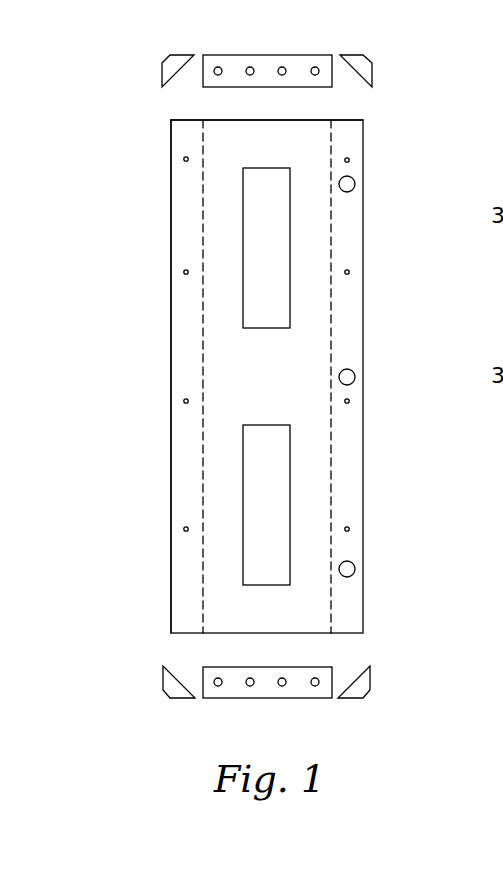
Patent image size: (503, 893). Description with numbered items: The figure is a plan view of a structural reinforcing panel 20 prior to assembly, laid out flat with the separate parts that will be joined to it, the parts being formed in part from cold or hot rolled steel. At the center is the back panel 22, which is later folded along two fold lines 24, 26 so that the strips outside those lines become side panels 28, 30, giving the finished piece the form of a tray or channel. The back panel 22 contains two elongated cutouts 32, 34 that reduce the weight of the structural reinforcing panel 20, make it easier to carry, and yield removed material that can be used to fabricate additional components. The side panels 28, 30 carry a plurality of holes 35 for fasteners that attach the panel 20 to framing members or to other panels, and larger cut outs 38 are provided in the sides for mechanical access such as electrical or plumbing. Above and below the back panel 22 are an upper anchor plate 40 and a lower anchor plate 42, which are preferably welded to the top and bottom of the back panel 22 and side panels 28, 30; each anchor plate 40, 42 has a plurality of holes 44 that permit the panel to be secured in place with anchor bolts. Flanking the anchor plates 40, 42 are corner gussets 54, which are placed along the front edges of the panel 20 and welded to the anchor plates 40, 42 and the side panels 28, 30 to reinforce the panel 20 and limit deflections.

The structural reinforcing panel 20 is at (402, 38).
The back panel 22 is at (235, 125).
The fold line 24 is at (332, 305).
The fold line 26 is at (202, 465).
The side panel 28 is at (357, 135).
The side panel 30 is at (179, 507).
The cutout 32 is at (267, 328).
The cutout 34 is at (252, 425).
The holes 35 is at (184, 158).
The cut outs 38 is at (355, 184).
The upper anchor plate 40 is at (275, 55).
The lower anchor plate 42 is at (267, 698).
The holes 44 is at (282, 75).
The corner gussets 54 is at (174, 57).